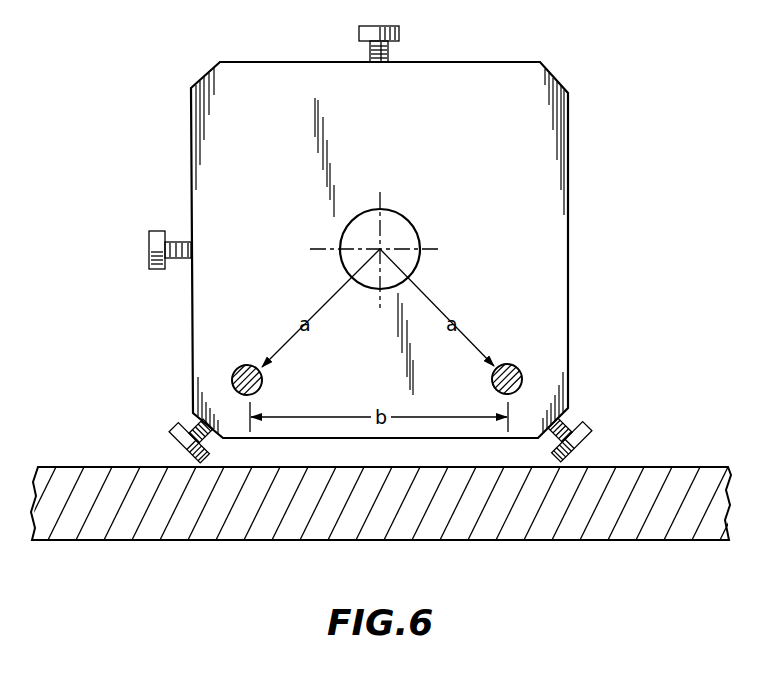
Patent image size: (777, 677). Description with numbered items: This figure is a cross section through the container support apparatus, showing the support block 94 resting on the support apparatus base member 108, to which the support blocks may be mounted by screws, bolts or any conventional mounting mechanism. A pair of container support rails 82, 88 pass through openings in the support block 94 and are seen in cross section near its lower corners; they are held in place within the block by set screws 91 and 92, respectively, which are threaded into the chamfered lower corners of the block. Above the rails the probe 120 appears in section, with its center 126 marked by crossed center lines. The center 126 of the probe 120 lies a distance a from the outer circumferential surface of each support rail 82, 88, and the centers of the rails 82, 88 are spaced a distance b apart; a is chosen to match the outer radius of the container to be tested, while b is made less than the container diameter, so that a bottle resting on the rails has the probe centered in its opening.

The support block 94 is at (568, 217).
The probe 120 is at (351, 221).
The center of the probe 126 is at (381, 248).
The container support rail 88 is at (233, 377).
The container support rail 82 is at (521, 374).
The set screw 91 is at (168, 436).
The set screw 92 is at (591, 441).
The support apparatus base member 108 is at (648, 466).